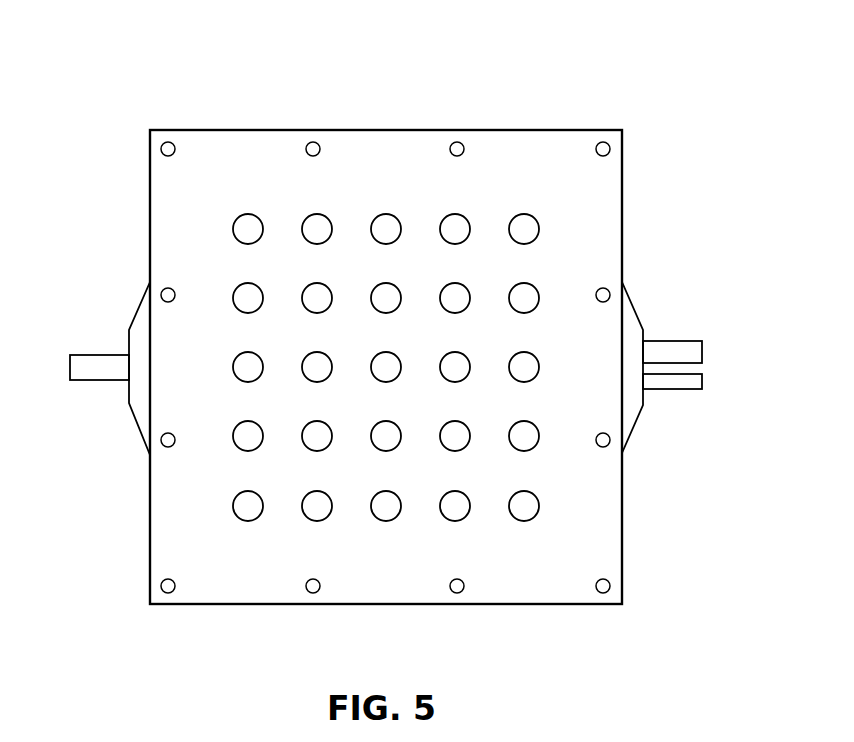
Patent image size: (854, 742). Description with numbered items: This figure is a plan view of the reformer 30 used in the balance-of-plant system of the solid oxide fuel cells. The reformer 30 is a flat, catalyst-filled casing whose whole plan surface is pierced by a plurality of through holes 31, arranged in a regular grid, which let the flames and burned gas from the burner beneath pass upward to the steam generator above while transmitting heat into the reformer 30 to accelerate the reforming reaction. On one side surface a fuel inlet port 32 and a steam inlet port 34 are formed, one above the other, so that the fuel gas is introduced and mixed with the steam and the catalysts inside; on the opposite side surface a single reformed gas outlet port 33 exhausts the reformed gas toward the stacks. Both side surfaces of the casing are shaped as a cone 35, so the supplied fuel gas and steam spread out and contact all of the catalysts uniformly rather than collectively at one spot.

The reformer 30 is at (580, 57).
The through holes 31 is at (317, 506).
The fuel inlet port 32 is at (675, 352).
The reformed gas outlet port 33 is at (92, 364).
The steam inlet port 34 is at (672, 383).
The cone 35 is at (140, 403).